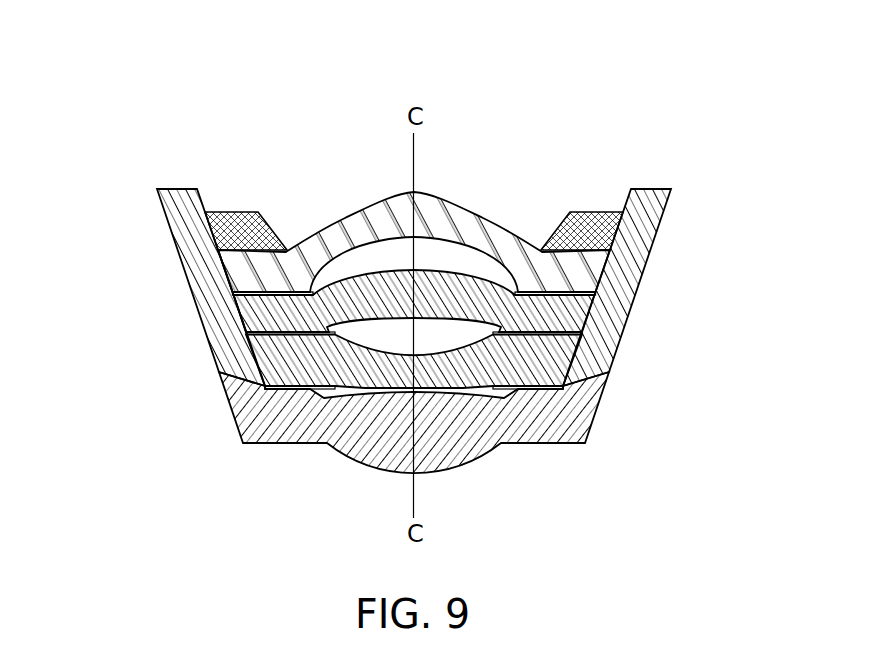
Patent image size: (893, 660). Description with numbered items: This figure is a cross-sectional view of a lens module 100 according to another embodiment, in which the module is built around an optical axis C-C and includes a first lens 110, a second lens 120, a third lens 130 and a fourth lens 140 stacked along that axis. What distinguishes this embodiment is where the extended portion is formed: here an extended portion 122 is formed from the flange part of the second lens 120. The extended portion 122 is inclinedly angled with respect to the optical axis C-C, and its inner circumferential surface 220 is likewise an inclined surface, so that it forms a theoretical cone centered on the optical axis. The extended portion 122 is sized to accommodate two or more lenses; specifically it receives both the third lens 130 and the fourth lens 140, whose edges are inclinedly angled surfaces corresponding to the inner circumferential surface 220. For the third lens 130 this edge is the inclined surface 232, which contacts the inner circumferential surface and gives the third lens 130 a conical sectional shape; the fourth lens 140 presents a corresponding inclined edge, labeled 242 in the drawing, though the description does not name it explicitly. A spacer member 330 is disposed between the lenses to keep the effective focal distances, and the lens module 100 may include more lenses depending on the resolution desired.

The lens module 100 is at (650, 157).
The first lens 110 is at (557, 432).
The second lens 120 is at (557, 358).
The extended portion 122 is at (640, 243).
The third lens 130 is at (568, 315).
The fourth lens 140 is at (588, 272).
The inner circumferential surface 220 is at (206, 191).
The inclined surface 232 is at (250, 318).
The first bonding portion 242 is at (233, 270).
The spacer member 330 is at (635, 207).